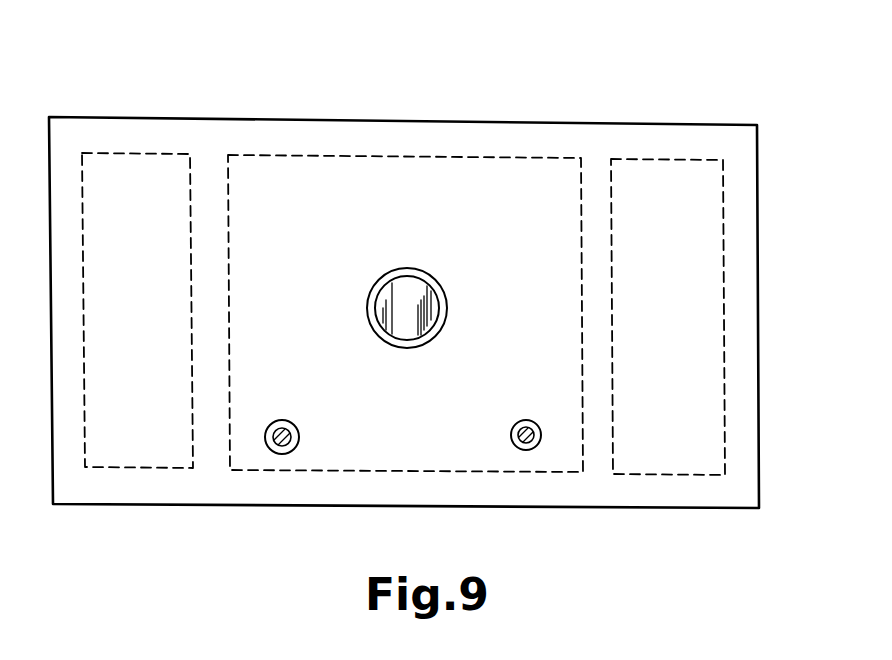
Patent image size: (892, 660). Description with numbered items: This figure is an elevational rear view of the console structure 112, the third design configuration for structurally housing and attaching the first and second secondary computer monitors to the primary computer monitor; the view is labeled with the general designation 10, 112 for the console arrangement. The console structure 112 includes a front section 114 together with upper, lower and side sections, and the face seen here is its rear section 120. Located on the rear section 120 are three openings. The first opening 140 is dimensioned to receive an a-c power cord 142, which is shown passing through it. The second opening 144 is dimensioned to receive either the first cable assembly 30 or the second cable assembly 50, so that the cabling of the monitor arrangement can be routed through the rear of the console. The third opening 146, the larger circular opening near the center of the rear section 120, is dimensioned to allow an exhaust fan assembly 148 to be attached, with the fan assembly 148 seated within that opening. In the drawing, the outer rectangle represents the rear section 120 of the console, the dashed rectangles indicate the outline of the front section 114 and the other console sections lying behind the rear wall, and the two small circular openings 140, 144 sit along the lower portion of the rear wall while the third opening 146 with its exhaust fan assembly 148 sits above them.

The sign assembly 10 is at (409, 259).
The console structure 112 is at (641, 72).
The front section 114 is at (195, 142).
The rear section 120 is at (637, 143).
The first opening 140 is at (268, 447).
The a-c power cord 142 is at (289, 447).
The second opening 144 is at (516, 449).
The third opening 146 is at (391, 267).
The exhaust fan assembly 148 is at (405, 288).
The first cable assembly 30 is at (602, 483).
The second cable assembly 50 is at (529, 441).